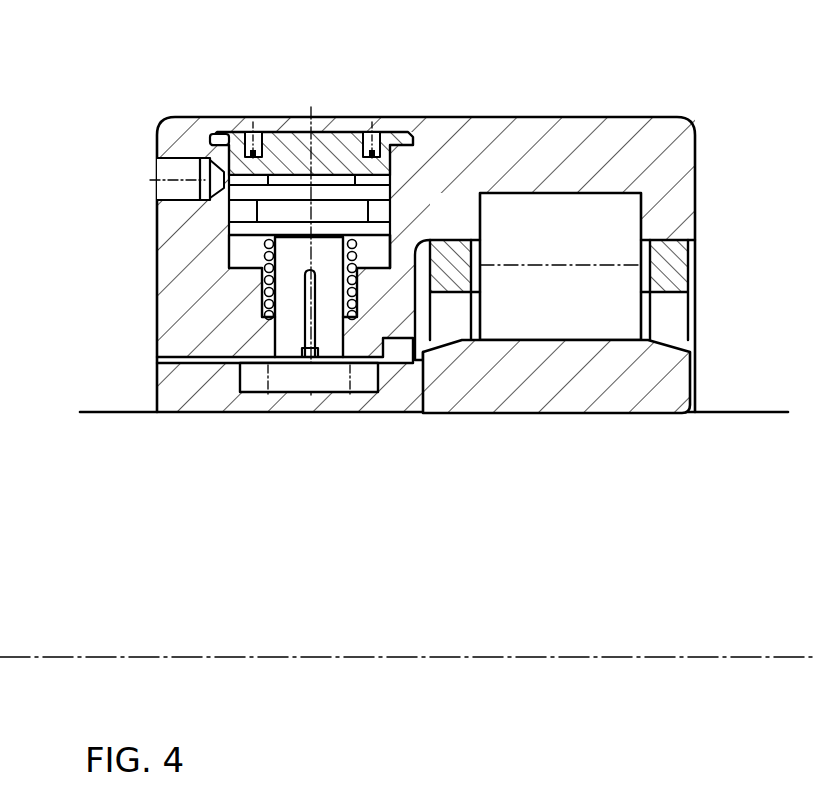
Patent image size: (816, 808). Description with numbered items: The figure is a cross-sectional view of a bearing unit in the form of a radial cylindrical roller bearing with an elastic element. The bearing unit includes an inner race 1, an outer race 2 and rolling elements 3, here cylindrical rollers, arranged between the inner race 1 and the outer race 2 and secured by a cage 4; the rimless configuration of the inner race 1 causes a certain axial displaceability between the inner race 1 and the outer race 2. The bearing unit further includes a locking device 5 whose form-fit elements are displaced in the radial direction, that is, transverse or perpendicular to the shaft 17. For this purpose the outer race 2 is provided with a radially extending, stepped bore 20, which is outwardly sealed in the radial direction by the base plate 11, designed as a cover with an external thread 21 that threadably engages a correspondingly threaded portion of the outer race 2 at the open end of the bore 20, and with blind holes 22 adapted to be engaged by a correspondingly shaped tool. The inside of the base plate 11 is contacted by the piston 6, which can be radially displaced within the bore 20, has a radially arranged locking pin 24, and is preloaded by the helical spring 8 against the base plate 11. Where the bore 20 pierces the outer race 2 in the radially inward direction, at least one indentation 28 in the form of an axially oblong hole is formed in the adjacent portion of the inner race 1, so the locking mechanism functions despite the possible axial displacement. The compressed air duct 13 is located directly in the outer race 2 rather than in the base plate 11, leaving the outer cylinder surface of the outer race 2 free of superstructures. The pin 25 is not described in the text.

The inner race 1 is at (637, 362).
The outer race 2 is at (678, 165).
The rolling elements 3 is at (615, 235).
The cage 4 is at (683, 273).
The locking device 5 is at (367, 262).
The piston 6 is at (268, 205).
The helical spring 8 is at (260, 285).
The base plate 11 is at (293, 148).
The compressed air duct 13 is at (180, 190).
The shaft 17 is at (692, 463).
The bore 20 is at (243, 248).
The external thread 21 is at (237, 133).
The blind holes 22 is at (262, 135).
The locking pin 24 is at (287, 280).
The pin 25 is at (310, 310).
The indentation 28 is at (332, 378).